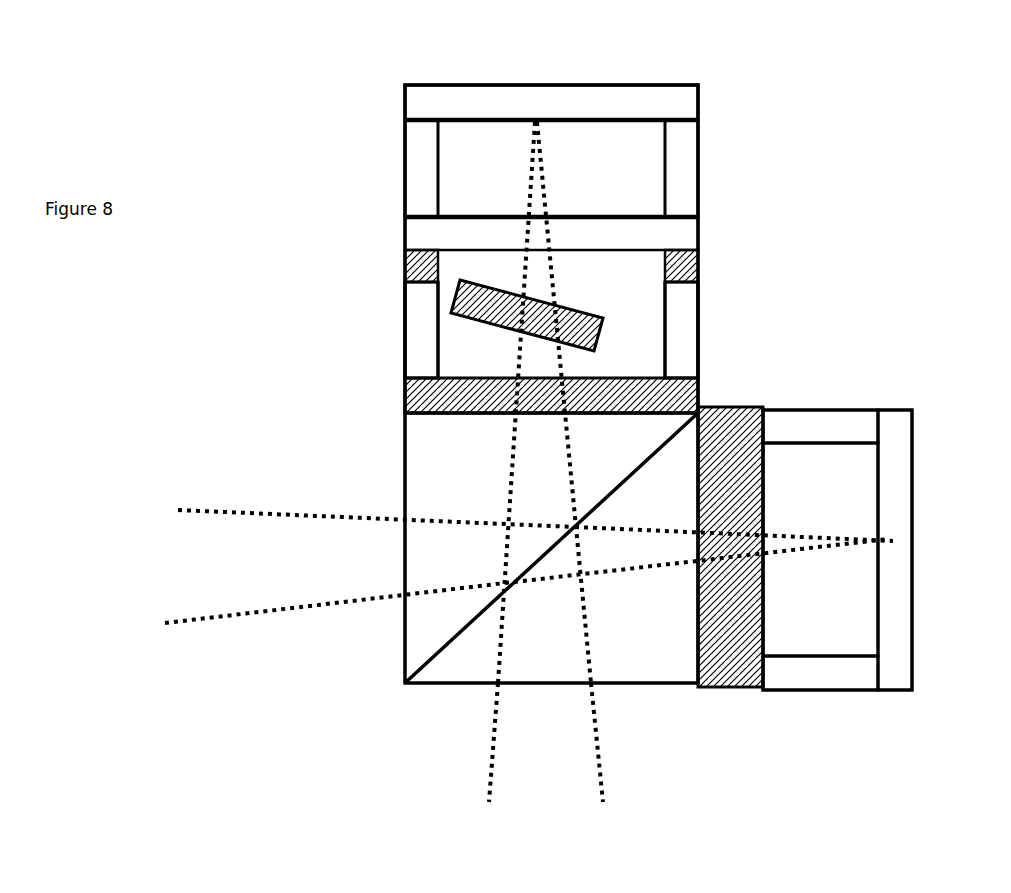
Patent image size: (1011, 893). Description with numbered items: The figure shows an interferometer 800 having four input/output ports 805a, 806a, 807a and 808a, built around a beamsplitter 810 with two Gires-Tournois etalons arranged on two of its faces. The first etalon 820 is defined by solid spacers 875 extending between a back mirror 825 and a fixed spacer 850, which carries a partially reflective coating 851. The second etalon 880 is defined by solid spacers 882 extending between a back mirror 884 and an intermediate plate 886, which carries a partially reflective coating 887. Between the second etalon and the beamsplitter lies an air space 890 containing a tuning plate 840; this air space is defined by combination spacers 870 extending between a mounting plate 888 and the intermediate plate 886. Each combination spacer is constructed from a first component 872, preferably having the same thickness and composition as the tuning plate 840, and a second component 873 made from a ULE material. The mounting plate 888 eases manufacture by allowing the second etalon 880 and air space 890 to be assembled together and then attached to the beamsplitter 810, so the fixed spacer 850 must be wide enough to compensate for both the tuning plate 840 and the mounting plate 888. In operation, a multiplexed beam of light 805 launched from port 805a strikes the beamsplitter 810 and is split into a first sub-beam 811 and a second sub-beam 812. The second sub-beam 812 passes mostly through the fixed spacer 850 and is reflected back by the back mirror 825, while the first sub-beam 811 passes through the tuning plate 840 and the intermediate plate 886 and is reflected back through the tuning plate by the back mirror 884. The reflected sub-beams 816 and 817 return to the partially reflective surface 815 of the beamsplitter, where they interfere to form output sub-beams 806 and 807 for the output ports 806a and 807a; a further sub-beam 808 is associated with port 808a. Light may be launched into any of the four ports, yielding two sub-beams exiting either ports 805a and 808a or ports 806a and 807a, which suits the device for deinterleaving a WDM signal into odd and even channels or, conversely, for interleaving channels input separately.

The interferometer 800 is at (195, 88).
The second etalon 880 is at (522, 83).
The back mirror 884 is at (667, 85).
The solid spacers 882 is at (422, 135).
The partially reflective coating 887 is at (458, 213).
The intermediate plate 886 is at (405, 235).
The first component 872 is at (405, 262).
The combination spacers 870 is at (405, 300).
The second component 873 is at (405, 360).
The mounting plate 888 is at (405, 405).
The air space 890 is at (551, 330).
The tuning plate 840 is at (553, 303).
The beamsplitter 810 is at (392, 703).
The partially reflective surface 815 is at (450, 638).
The reflected sub-beam 816 is at (505, 478).
The first sub-beam 811 is at (570, 475).
The sub-beam 807 is at (490, 738).
The output port 807a is at (493, 813).
The output beam 808 is at (603, 738).
The input/output port 808a is at (589, 813).
The multiplexed beam of light 805 is at (327, 525).
The input port 805a is at (156, 485).
The second sub-beam 812 is at (600, 527).
The sub-beam 806 is at (295, 623).
The output port 806a is at (142, 636).
The reflected sub-beam 817 is at (617, 575).
The fixed spacer 850 is at (717, 688).
The first etalon 820 is at (876, 550).
The back mirror 825 is at (897, 408).
The solid spacers 875 is at (807, 423).
The partially reflective coating 851 is at (767, 573).